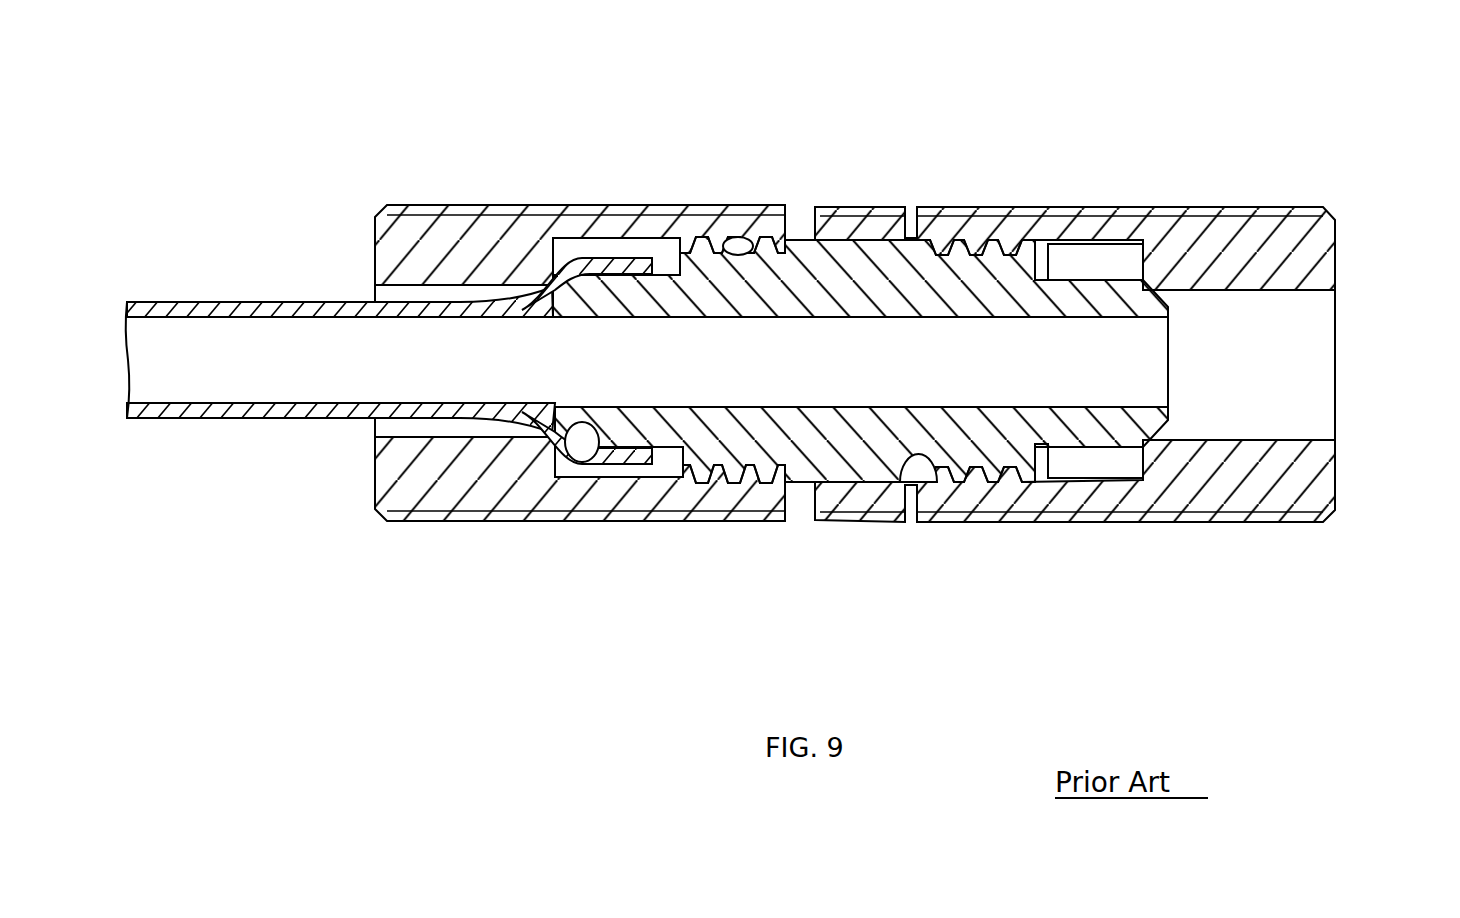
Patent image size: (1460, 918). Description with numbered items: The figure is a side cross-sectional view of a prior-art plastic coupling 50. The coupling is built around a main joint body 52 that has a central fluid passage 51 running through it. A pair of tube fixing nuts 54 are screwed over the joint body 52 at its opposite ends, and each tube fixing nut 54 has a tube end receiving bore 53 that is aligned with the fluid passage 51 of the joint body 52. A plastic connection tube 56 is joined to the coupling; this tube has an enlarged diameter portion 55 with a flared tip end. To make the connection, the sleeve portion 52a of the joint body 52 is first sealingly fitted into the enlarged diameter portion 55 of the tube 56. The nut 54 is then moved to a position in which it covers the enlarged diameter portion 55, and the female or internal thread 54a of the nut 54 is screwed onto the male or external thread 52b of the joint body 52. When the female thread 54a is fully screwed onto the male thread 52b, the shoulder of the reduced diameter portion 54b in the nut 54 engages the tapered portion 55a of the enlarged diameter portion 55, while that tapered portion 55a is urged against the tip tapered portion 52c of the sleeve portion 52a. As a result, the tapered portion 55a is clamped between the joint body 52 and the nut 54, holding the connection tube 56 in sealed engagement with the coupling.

The plastic coupling 50 is at (1256, 186).
The central fluid passage 51 is at (865, 350).
The main joint body 52 is at (850, 482).
The sleeve portion 52a is at (647, 427).
The male or external thread 52b is at (732, 246).
The tip tapered portion 52c is at (597, 427).
The tube end receiving bore 53 is at (1293, 358).
The tube fixing nut 54 is at (416, 238).
The female or internal thread 54a is at (741, 246).
The reduced diameter portion 54b is at (1150, 282).
The enlarged diameter portion 55 is at (621, 265).
The tapered portion 55a is at (540, 456).
The plastic connection tube 56 is at (278, 414).